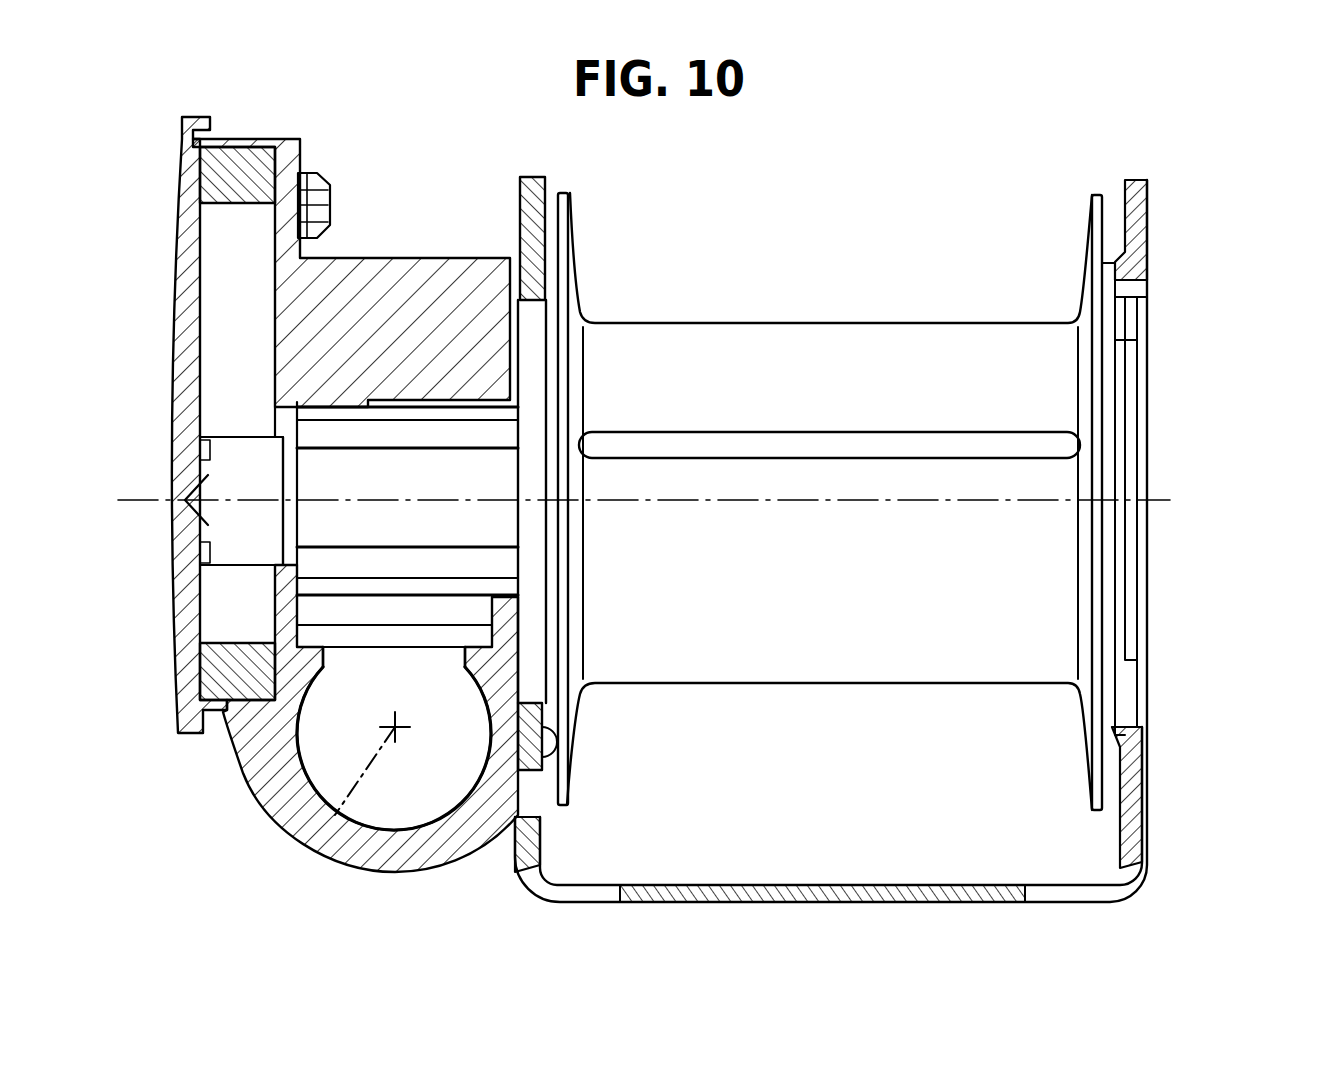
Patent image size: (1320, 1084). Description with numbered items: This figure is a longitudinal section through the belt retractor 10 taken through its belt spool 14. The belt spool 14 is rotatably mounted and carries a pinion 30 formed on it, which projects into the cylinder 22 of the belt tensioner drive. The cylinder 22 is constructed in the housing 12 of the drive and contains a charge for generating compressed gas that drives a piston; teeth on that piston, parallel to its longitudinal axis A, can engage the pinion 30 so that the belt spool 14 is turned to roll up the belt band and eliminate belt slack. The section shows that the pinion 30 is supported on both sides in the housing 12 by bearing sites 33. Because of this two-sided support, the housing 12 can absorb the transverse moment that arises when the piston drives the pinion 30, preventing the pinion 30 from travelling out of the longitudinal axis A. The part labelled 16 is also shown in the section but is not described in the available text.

The belt retractor 10 is at (1172, 828).
The housing 12 is at (265, 760).
The belt spool 14 is at (773, 347).
The housing 16 is at (858, 896).
The cylinder 22 is at (396, 805).
The pinion 30 is at (315, 468).
The bearing sites 33 is at (285, 578).
The longitudinal axis A is at (303, 835).